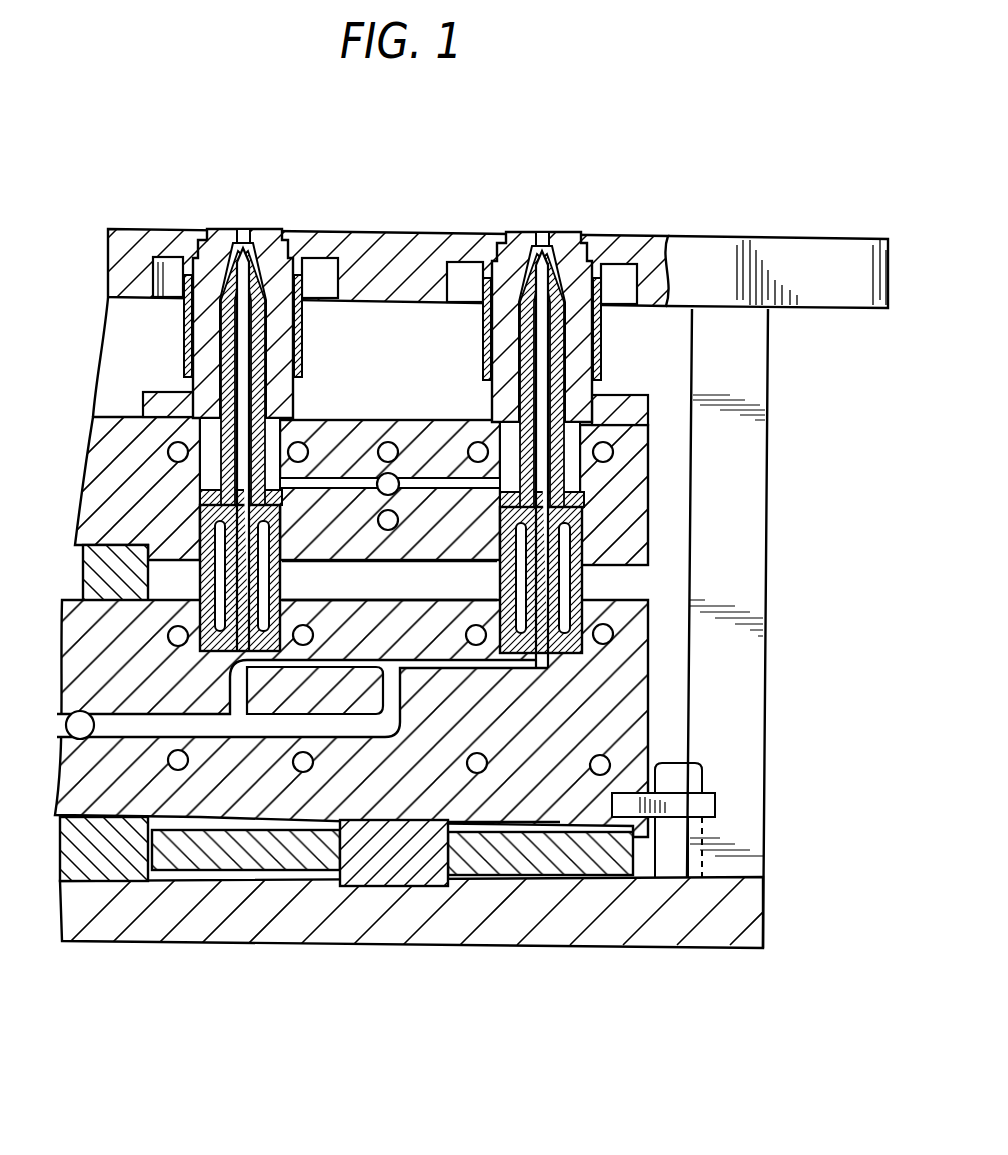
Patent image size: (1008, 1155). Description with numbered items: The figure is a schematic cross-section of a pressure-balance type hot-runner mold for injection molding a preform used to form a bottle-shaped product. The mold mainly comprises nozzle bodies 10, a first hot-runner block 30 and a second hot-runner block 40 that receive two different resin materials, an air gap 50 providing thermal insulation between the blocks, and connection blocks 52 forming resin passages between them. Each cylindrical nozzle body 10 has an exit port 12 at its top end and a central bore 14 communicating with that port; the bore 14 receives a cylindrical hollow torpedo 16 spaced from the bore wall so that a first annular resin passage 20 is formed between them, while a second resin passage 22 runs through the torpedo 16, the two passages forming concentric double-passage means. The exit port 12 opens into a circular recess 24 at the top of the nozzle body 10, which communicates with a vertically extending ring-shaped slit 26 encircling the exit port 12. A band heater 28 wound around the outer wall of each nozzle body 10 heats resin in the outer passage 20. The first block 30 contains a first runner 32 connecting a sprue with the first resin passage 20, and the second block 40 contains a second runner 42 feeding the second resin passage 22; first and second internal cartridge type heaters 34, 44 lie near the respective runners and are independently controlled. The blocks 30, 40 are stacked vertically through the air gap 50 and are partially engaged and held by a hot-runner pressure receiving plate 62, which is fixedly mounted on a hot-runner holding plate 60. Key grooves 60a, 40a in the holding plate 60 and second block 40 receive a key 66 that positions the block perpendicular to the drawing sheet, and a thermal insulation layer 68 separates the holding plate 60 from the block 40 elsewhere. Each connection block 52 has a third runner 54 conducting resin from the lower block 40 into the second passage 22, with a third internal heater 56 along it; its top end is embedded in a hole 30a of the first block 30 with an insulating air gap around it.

The nozzle body 10 is at (268, 256).
The exit port 12 is at (541, 254).
The central bore 14 is at (568, 268).
The cylindrical hollow torpedo 16 is at (559, 357).
The first annular resin passage 20 is at (566, 336).
The second resin passage 22 is at (545, 383).
The circular recess 24 is at (242, 250).
The ring-shaped slit 26 is at (207, 232).
The band heater 28 is at (303, 342).
The first hot-runner block 30 is at (635, 505).
The hole 30a is at (141, 578).
The first runner 32 is at (425, 478).
The first internal cartridge type heater 34 is at (617, 451).
The second hot-runner block 40 is at (642, 690).
The key groove 40a is at (450, 808).
The second runner 42 is at (255, 737).
The second internal cartridge type heater 44 is at (612, 636).
The air gap 50 is at (420, 590).
The connection block 52 is at (580, 578).
The third runner 54 is at (542, 594).
The third internal heater 56 is at (263, 571).
The hot-runner holding plate 60 is at (170, 935).
The key groove 60a is at (408, 888).
The hot-runner pressure receiving plate 62 is at (122, 545).
The key 66 is at (357, 860).
The thermal insulation layer 68 is at (302, 860).